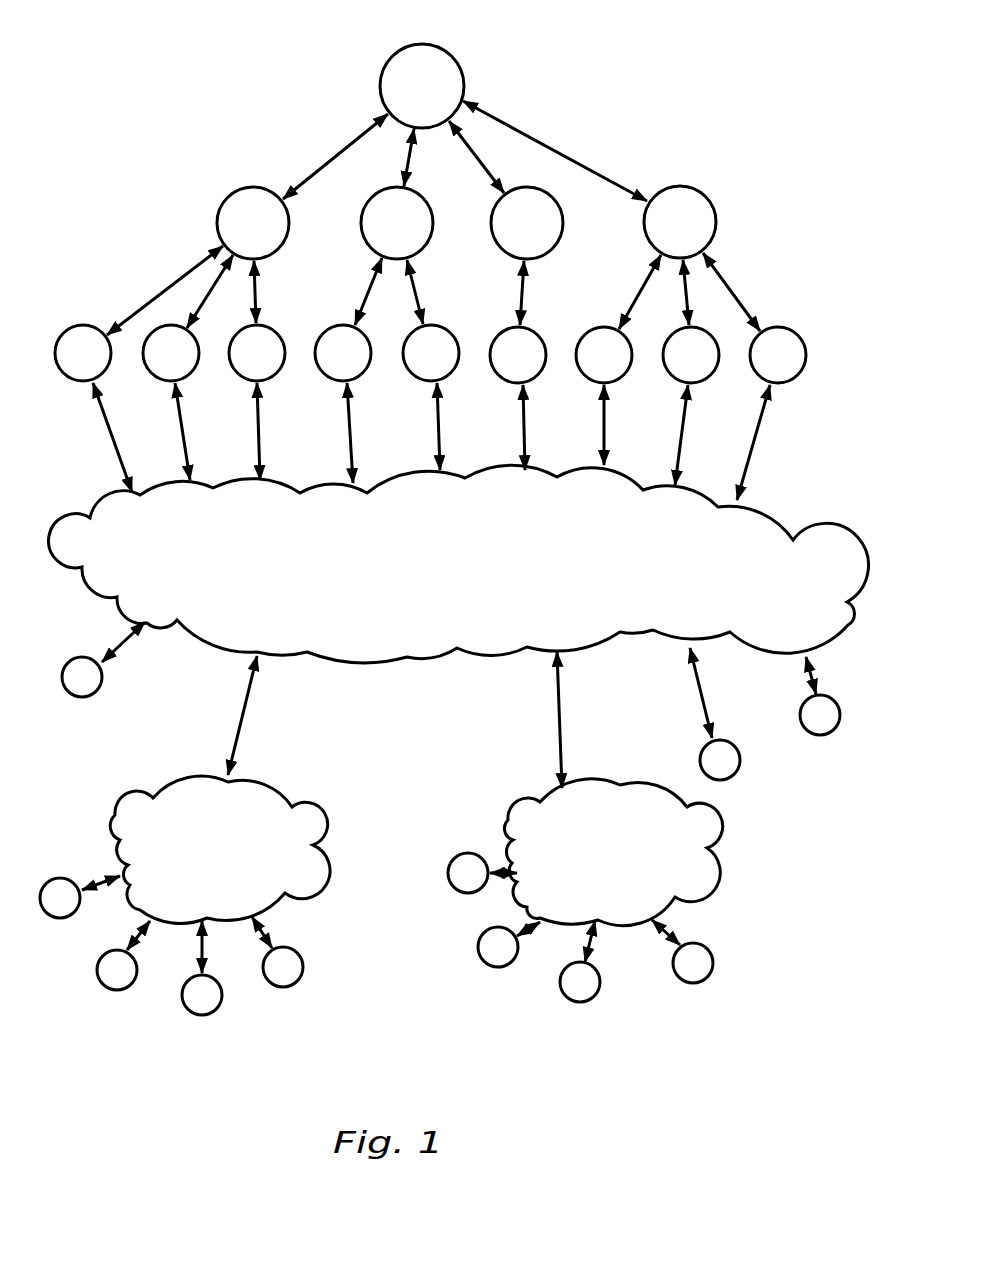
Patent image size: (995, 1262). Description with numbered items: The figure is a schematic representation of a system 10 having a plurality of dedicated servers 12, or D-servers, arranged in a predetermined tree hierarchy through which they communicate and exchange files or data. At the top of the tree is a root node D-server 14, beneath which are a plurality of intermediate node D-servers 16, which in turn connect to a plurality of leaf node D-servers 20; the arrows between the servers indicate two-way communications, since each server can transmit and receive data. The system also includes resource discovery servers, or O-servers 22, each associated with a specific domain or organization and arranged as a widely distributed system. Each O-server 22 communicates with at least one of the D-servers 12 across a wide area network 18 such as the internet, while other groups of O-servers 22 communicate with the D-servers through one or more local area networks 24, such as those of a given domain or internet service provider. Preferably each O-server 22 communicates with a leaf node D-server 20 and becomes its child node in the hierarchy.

The system 10 is at (120, 104).
The dedicated server 12 is at (380, 84).
The root node D-server 14 is at (395, 54).
The intermediate node D-server 16 is at (252, 186).
The wide area network 18 is at (830, 546).
The leaf node D-server 20 is at (74, 327).
The O-server 22 is at (82, 698).
The local area network 24 is at (333, 830).